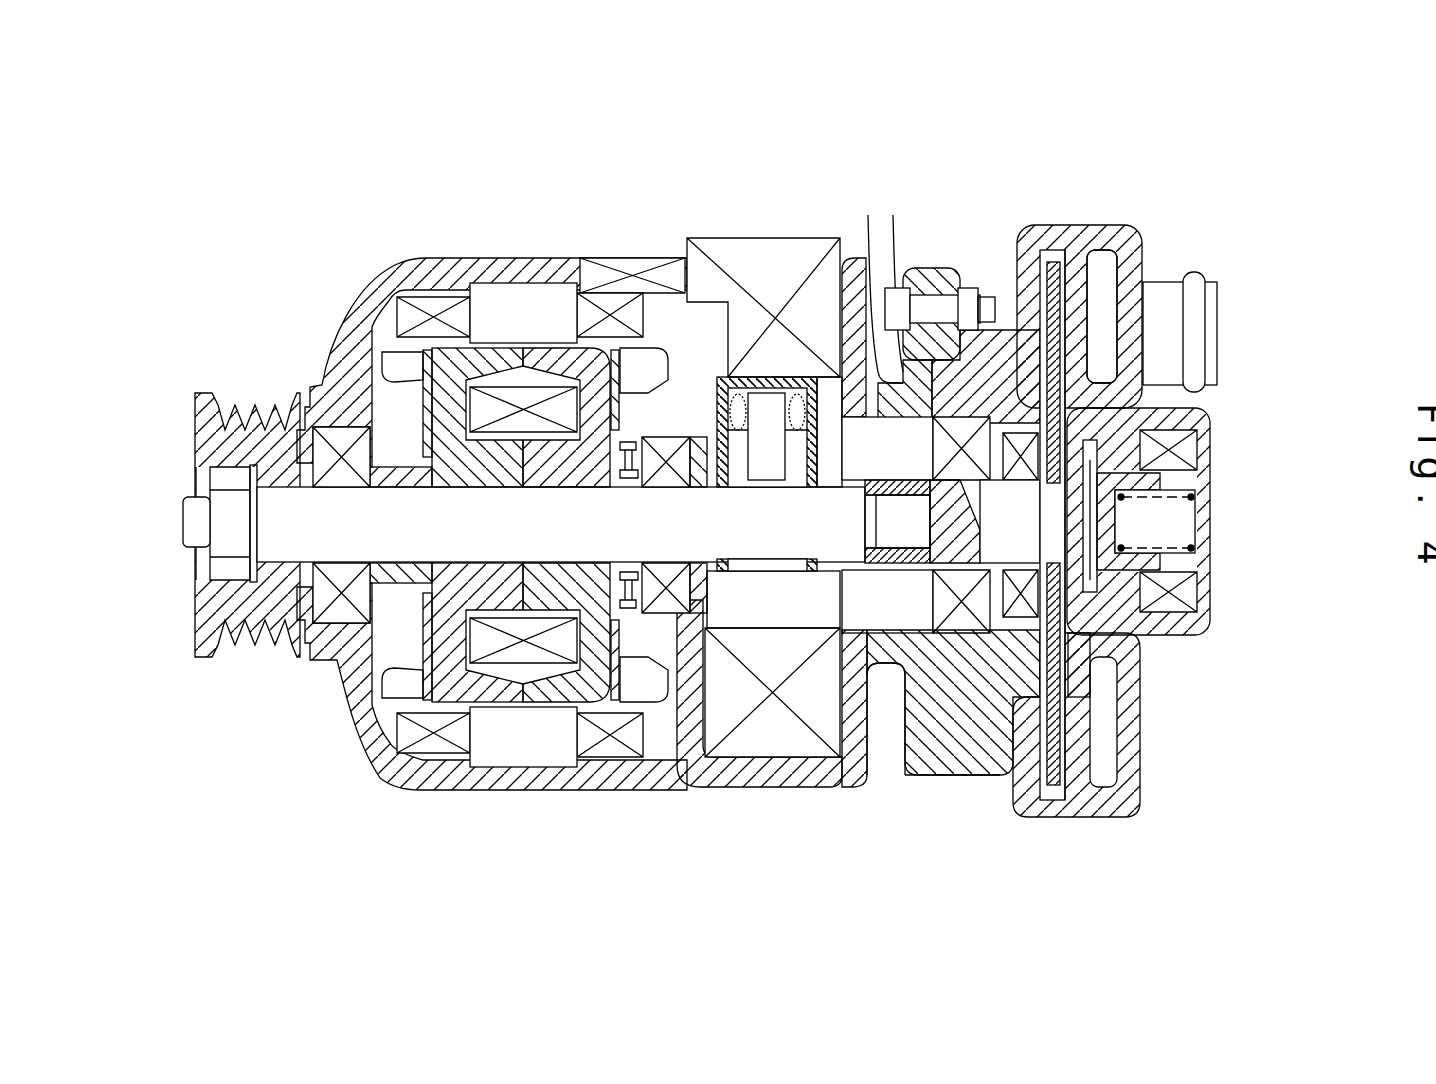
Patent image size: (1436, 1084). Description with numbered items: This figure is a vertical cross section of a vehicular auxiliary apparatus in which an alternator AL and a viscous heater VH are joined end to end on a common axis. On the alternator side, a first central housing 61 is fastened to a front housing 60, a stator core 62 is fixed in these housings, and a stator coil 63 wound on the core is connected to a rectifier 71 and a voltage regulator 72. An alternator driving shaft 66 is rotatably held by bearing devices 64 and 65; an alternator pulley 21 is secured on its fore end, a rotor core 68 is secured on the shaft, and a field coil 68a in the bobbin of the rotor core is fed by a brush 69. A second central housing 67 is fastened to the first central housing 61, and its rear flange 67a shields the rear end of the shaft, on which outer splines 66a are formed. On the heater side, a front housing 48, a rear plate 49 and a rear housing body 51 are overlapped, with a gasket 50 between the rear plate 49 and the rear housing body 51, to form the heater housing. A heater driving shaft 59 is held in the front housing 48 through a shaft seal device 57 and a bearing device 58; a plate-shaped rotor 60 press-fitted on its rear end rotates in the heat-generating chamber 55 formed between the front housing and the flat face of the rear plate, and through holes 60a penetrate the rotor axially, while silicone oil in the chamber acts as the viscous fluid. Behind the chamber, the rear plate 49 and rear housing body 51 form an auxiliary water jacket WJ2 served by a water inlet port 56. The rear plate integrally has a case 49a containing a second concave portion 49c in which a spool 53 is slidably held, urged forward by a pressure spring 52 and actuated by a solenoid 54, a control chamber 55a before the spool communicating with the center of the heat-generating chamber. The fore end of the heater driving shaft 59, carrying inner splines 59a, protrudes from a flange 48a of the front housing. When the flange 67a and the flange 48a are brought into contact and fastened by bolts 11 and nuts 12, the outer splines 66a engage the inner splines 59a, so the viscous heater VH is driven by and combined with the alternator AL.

The bolts 11 is at (885, 330).
The nuts 12 is at (960, 288).
The alternator pulley 21 is at (200, 428).
The front housing 48 is at (1028, 805).
The flange 48a is at (940, 782).
The rear plate 49 is at (1052, 805).
The case 49a is at (1205, 425).
The second concave portion 49c is at (1185, 517).
The gasket 50 is at (1068, 812).
The rear housing body 51 is at (1120, 232).
The pressure spring 52 is at (1180, 518).
The spool 53 is at (1150, 480).
The solenoid 54 is at (1180, 592).
The heat-generating chamber 55 is at (1015, 272).
The control chamber 55a is at (1190, 542).
The water inlet port 56 is at (1212, 333).
The shaft seal device 57 is at (995, 685).
The bearing device 58 is at (940, 602).
The heater driving shaft 59 is at (981, 526).
The inner splines 59a is at (893, 342).
The rotor 60 is at (378, 315).
The through holes 60a is at (1150, 668).
The first central housing 61 is at (643, 278).
The stator core 62 is at (522, 283).
The stator coil 63 is at (440, 298).
The bearing device 64 is at (373, 738).
The bearing device 65 is at (670, 598).
The alternator driving shaft 66 is at (433, 536).
The outer splines 66a is at (893, 470).
The second central housing 67 is at (852, 737).
The flange 67a is at (920, 775).
The rotor core 68 is at (450, 690).
The field coil 68a is at (525, 660).
The brush 69 is at (790, 445).
The rectifier 71 is at (808, 748).
The voltage regulator 72 is at (745, 265).
The alternator AL is at (596, 219).
The viscous heater VH is at (1004, 225).
The auxiliary water jacket WJ2 is at (1112, 262).